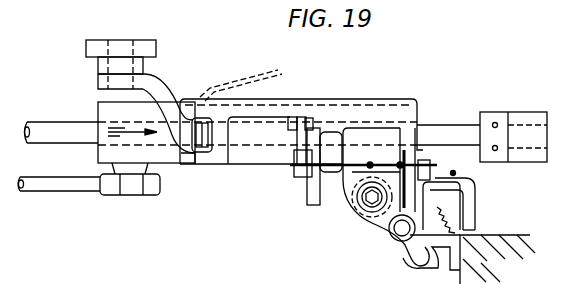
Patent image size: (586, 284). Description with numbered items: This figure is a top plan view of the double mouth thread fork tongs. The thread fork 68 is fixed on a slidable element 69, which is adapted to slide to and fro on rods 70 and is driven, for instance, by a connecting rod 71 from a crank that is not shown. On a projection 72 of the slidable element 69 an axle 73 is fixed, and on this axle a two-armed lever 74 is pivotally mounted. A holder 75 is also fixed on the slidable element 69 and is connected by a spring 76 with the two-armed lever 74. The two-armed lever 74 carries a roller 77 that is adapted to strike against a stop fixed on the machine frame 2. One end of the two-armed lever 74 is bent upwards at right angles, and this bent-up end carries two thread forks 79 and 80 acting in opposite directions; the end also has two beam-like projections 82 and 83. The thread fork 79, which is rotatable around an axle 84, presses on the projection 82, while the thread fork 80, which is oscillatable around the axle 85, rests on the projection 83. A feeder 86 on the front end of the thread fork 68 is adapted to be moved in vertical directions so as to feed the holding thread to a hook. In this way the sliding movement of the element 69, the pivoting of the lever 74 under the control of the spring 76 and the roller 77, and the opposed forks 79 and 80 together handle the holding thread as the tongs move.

The machine frame 2 is at (463, 258).
The thread fork 68 is at (350, 108).
The slidable element 69 is at (107, 113).
The rods 70 is at (467, 135).
The connecting rod 71 is at (69, 180).
The projection 72 is at (348, 182).
The axle 73 is at (372, 213).
The two-armed lever 74 is at (433, 250).
The holder 75 is at (472, 198).
The spring 76 is at (433, 228).
The roller 77 is at (393, 233).
The thread fork 79 is at (302, 155).
The thread fork 80 is at (403, 163).
The beam-like projection 82 is at (308, 190).
The beam-like projection 83 is at (382, 173).
The axle 84 is at (308, 117).
The axle 85 is at (425, 190).
The feeder 86 is at (192, 140).